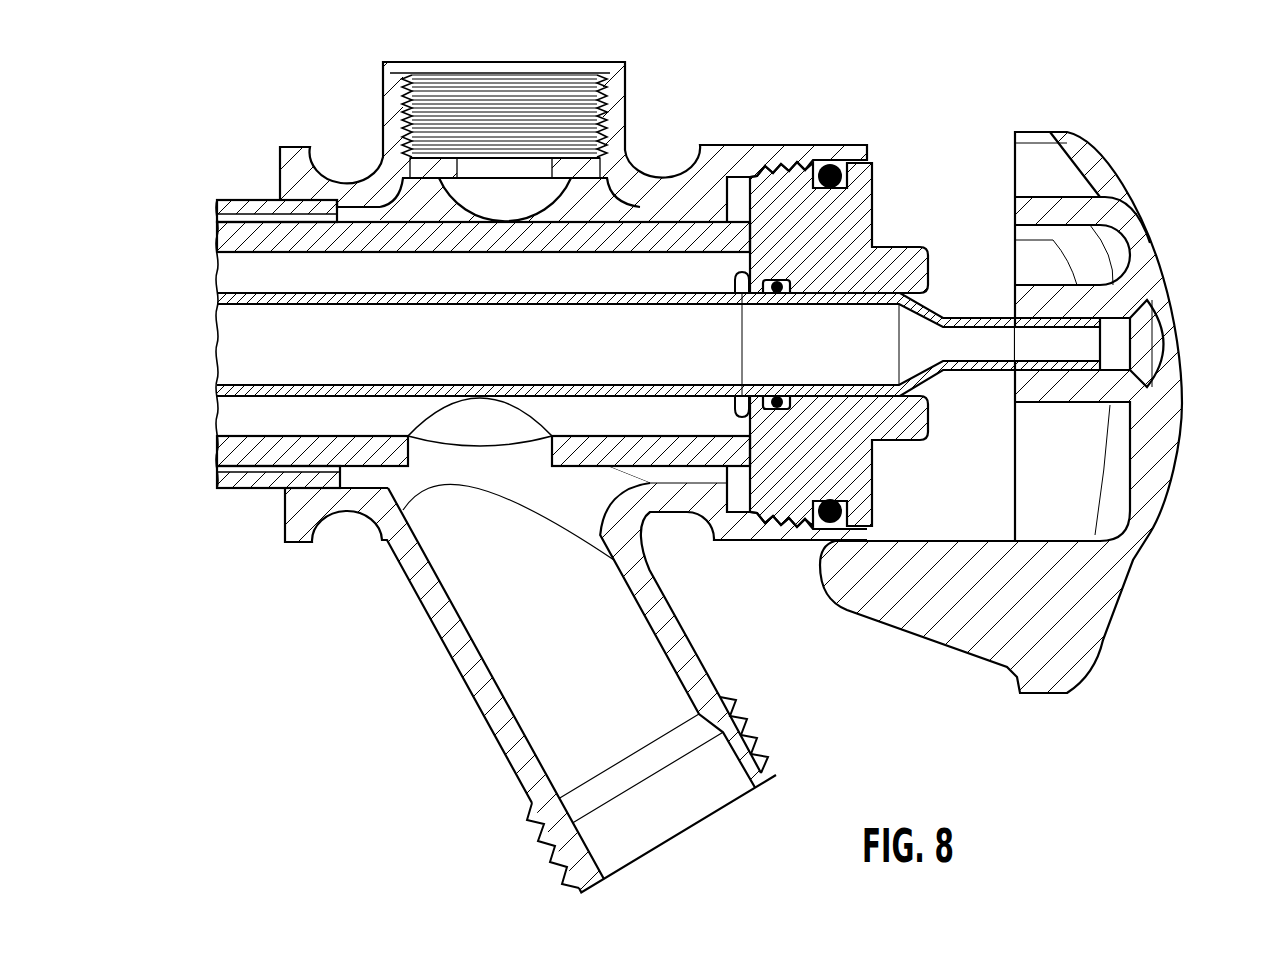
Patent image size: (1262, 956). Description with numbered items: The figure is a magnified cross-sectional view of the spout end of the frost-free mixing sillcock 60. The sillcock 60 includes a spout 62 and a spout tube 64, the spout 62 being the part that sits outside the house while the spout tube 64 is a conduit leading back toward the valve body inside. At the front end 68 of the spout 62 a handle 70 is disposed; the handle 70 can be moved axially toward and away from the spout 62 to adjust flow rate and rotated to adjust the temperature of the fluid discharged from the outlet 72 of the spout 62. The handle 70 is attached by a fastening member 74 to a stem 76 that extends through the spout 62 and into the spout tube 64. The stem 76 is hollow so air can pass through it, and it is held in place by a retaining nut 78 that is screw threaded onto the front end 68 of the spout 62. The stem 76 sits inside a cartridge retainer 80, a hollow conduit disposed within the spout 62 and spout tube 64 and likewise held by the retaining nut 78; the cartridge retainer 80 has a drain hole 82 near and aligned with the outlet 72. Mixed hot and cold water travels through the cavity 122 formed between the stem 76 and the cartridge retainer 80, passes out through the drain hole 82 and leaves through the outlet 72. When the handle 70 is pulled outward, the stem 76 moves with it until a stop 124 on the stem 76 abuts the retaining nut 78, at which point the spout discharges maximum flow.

The frost-free mixing sillcock 60 is at (858, 52).
The spout 62 is at (615, 162).
The spout tube 64 is at (243, 207).
The front end 68 is at (828, 160).
The handle 70 is at (1080, 183).
The outlet 72 is at (607, 710).
The fastening member 74 is at (1160, 330).
The stem 76 is at (590, 388).
The retaining nut 78 is at (783, 480).
The cartridge retainer 80 is at (643, 240).
The drain hole 82 is at (488, 440).
The cavity 122 is at (368, 287).
The stop 124 is at (733, 404).